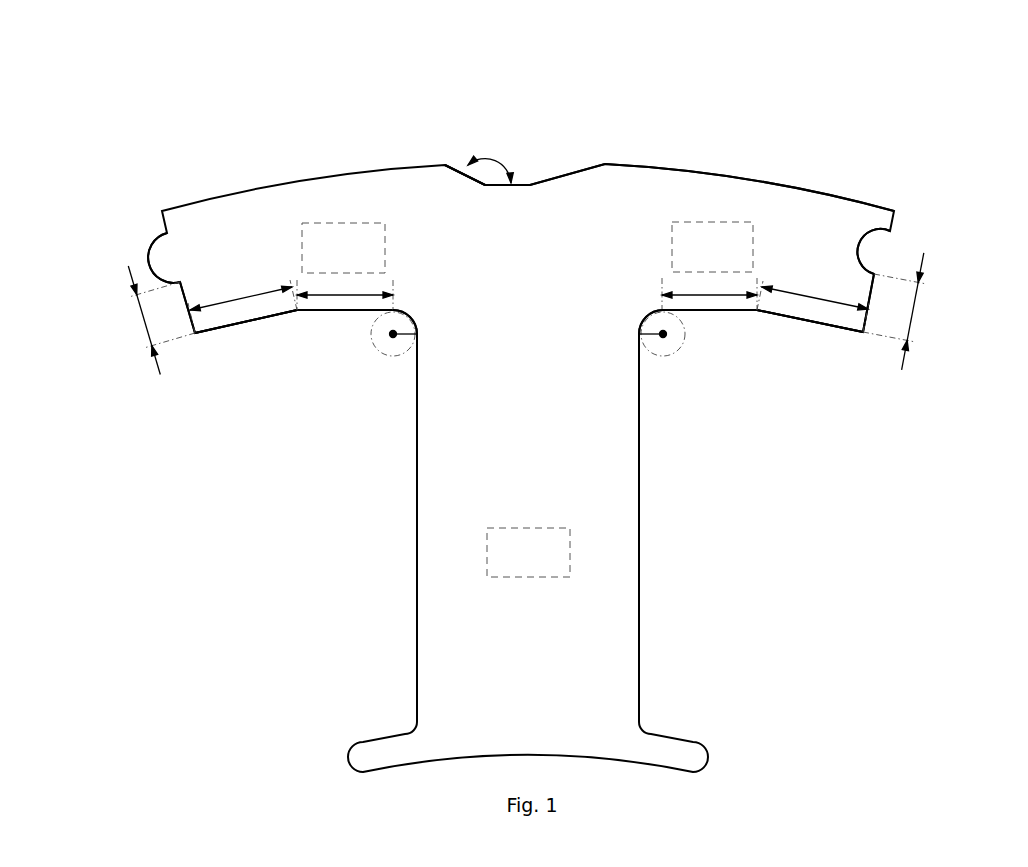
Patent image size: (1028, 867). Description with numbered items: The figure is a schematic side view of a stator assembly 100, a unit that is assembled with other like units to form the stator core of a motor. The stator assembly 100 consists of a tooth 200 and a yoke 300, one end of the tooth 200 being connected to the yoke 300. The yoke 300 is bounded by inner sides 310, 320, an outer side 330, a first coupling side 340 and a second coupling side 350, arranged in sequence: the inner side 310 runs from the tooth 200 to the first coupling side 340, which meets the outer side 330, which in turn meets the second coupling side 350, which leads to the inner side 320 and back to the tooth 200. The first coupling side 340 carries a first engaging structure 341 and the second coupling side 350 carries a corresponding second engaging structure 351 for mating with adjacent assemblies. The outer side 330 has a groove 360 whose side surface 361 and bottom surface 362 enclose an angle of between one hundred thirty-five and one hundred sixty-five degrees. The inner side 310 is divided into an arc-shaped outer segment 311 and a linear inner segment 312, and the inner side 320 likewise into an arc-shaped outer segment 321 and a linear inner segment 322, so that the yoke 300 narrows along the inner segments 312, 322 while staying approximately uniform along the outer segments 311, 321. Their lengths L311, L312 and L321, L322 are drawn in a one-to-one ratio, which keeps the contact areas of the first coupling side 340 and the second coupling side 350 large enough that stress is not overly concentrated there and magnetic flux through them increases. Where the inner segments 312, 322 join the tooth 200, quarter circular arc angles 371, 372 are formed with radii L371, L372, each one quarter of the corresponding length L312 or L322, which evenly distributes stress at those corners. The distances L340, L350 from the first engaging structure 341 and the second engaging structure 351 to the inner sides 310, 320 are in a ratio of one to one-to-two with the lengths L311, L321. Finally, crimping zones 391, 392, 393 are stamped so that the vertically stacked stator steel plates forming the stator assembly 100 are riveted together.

The stator assembly 100 is at (80, 57).
The tooth 200 is at (417, 593).
The yoke 300 is at (760, 200).
The inner side 310 is at (300, 433).
The outer segment 311 is at (240, 312).
The inner segment 312 is at (325, 311).
The inner side 320 is at (857, 433).
The outer segment 321 is at (822, 323).
The inner segment 322 is at (735, 311).
The outer side 330 is at (823, 194).
The first coupling side 340 is at (184, 296).
The first engaging structure 341 is at (147, 258).
The second coupling side 350 is at (868, 318).
The second engaging structure 351 is at (860, 252).
The groove 360 is at (338, 103).
The side surface 361 is at (445, 165).
The bottom surface 362 is at (497, 190).
The circular arc angle 371 is at (372, 316).
The circular arc angle 372 is at (690, 313).
The crimping zone 391 is at (302, 248).
The crimping zone 392 is at (700, 222).
The crimping zone 393 is at (487, 553).
The length of outer segment 311 L311 is at (242, 298).
The length of inner segment 312 L312 is at (347, 297).
The length of outer segment 321 L321 is at (822, 296).
The length of inner segment 322 L322 is at (708, 296).
The distance between first engaging structure and inner side 310 L340 is at (142, 321).
The distance between second engaging structure and inner side 320 L350 is at (913, 315).
The radius length of circular arc angle 371 L371 is at (405, 352).
The radius length of circular arc angle 372 L372 is at (652, 345).